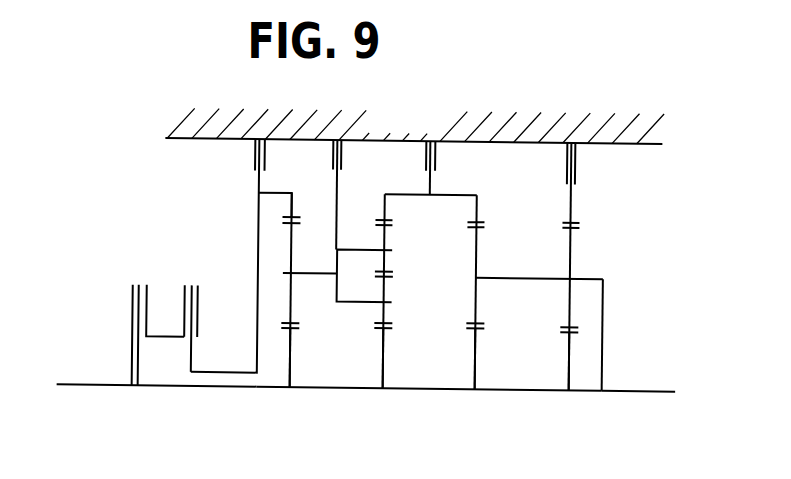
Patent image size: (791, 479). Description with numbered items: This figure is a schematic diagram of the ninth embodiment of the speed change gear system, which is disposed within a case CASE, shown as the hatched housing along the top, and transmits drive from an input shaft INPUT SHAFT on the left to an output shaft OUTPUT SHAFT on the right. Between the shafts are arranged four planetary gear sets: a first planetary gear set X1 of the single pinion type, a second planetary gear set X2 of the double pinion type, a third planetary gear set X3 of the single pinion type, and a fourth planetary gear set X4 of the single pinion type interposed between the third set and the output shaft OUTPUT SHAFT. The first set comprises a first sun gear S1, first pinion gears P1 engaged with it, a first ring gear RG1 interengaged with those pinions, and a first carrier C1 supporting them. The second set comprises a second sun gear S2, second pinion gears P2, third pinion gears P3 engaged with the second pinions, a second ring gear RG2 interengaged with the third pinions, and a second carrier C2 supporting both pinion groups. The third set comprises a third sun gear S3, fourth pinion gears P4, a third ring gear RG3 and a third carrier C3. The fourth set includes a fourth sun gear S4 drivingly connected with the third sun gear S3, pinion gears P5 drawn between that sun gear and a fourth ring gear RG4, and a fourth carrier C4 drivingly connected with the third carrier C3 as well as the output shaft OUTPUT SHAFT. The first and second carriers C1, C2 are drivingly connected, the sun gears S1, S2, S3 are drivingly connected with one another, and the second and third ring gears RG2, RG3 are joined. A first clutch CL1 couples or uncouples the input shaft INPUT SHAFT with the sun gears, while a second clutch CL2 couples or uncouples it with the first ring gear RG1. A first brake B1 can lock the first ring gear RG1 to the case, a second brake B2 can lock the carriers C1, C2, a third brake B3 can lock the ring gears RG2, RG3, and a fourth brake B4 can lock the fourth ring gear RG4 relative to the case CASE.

The case CASE is at (414, 120).
The input shaft INPUT SHAFT is at (86, 386).
The output shaft OUTPUT SHAFT is at (628, 389).
The first clutch CL1 is at (149, 318).
The second clutch CL2 is at (200, 312).
The first brake B1 is at (240, 158).
The second brake B2 is at (317, 159).
The third brake B3 is at (448, 159).
The fourth brake B4 is at (590, 164).
The first ring gear RG1 is at (287, 203).
The second ring gear RG2 is at (384, 207).
The third ring gear RG3 is at (495, 192).
The fourth ring gear RG4 is at (570, 205).
The first carrier C1 is at (308, 274).
The second carrier C2 is at (357, 258).
The third carrier C3 is at (506, 276).
The fourth carrier C4 is at (587, 274).
The first pinion gears P1 is at (291, 298).
The second pinion gears P2 is at (384, 315).
The third pinion gears P3 is at (384, 258).
The fourth pinion gears P4 is at (476, 297).
The fifth planet gear P5 is at (570, 306).
The first sun gear S1 is at (291, 359).
The second sun gear S2 is at (384, 359).
The third sun gear S3 is at (476, 357).
The fourth sun gear S4 is at (570, 358).
The first planetary gear set X1 is at (282, 347).
The second planetary gear set X2 is at (372, 347).
The third planetary gear set X3 is at (467, 353).
The fourth planetary gear set X4 is at (562, 354).